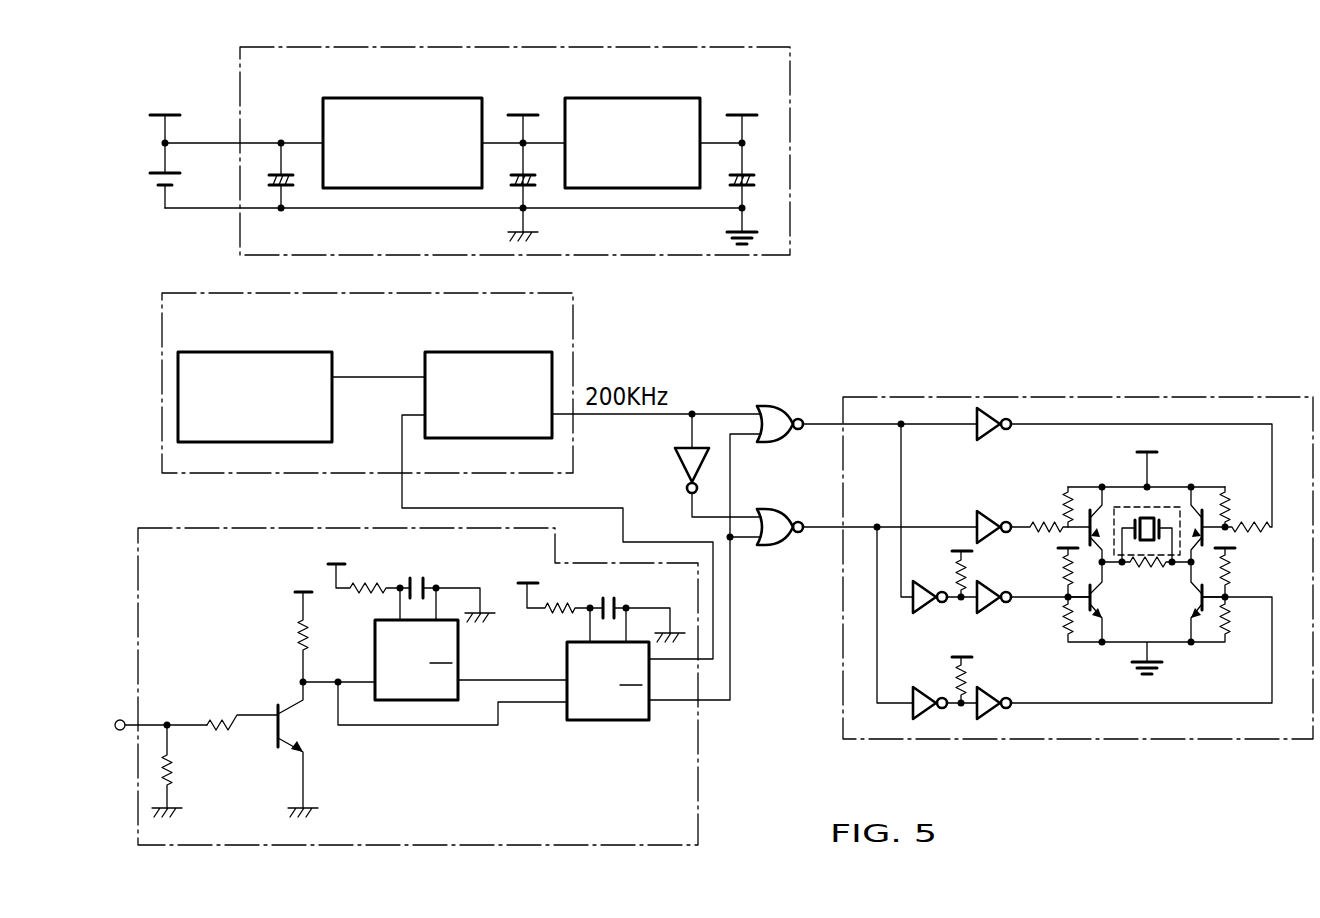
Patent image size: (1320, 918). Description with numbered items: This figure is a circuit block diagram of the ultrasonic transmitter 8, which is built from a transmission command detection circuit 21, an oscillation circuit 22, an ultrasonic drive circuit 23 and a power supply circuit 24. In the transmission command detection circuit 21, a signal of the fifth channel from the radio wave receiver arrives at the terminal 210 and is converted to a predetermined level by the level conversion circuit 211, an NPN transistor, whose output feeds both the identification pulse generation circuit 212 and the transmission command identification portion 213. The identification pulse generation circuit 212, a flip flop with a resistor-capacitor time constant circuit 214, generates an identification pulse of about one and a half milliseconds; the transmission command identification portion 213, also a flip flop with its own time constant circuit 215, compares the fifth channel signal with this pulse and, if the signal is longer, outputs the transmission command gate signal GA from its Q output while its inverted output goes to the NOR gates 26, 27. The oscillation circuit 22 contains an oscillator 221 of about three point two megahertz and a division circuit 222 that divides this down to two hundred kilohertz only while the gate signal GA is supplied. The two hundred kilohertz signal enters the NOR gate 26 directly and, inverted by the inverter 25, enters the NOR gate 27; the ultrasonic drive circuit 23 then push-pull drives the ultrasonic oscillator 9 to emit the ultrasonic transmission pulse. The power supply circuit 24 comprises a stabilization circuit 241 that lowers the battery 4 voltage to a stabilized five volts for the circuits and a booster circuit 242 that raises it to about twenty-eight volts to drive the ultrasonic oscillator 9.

The battery 4 is at (150, 178).
The ultrasonic transmitter 8 is at (842, 316).
The ultrasonic oscillator 9 is at (1149, 516).
The transmission command detection circuit 21 is at (700, 792).
The oscillation circuit 22 is at (573, 298).
The ultrasonic drive circuit 23 is at (1053, 742).
The power supply circuit 24 is at (790, 118).
The inverter 25 is at (675, 465).
The NOR gate 26 is at (775, 408).
The NOR gate 27 is at (775, 512).
The terminal 210 is at (117, 733).
The level conversion circuit 211 is at (306, 730).
The identification pulse generation circuit 212 is at (460, 652).
The transmission command identification portion 213 is at (605, 721).
The time constant circuit 214 is at (396, 574).
The time constant circuit 215 is at (589, 596).
The oscillator 221 is at (251, 352).
The division circuit 222 is at (484, 352).
The stabilization circuit 241 is at (403, 98).
The booster circuit 242 is at (638, 98).